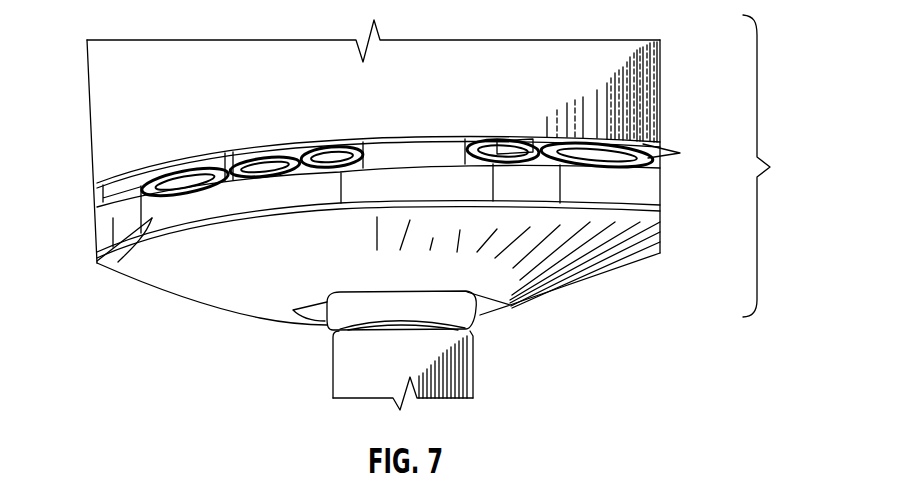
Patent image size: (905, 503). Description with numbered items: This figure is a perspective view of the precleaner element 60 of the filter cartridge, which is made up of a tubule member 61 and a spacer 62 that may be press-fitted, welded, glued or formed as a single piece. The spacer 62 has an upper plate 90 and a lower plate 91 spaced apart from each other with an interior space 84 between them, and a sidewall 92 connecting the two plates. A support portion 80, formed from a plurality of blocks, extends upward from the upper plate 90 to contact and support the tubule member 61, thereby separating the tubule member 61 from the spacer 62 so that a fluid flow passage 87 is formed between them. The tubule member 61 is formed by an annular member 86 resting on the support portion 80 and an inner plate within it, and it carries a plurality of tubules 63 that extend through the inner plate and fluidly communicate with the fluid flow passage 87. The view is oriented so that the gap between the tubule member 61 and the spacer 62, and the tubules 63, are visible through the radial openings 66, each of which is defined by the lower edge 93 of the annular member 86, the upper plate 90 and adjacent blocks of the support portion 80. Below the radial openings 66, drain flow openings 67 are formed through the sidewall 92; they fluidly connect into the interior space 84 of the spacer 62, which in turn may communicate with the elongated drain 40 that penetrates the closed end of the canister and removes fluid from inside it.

The drain 40 is at (473, 368).
The precleaner element 60 is at (774, 166).
The tubule member 61 is at (98, 78).
The spacer 62 is at (165, 288).
The tubules 63 is at (200, 170).
The radial openings 66 is at (112, 197).
The drain flow openings 67 is at (152, 218).
The support portion 80 is at (407, 180).
The interior space 84 is at (277, 202).
The annular member 86 is at (650, 70).
The fluid flow passage 87 is at (560, 152).
The upper plate 90 is at (610, 172).
The lower plate 91 is at (152, 216).
The sidewall 92 is at (358, 192).
The lower edge 93 is at (223, 162).